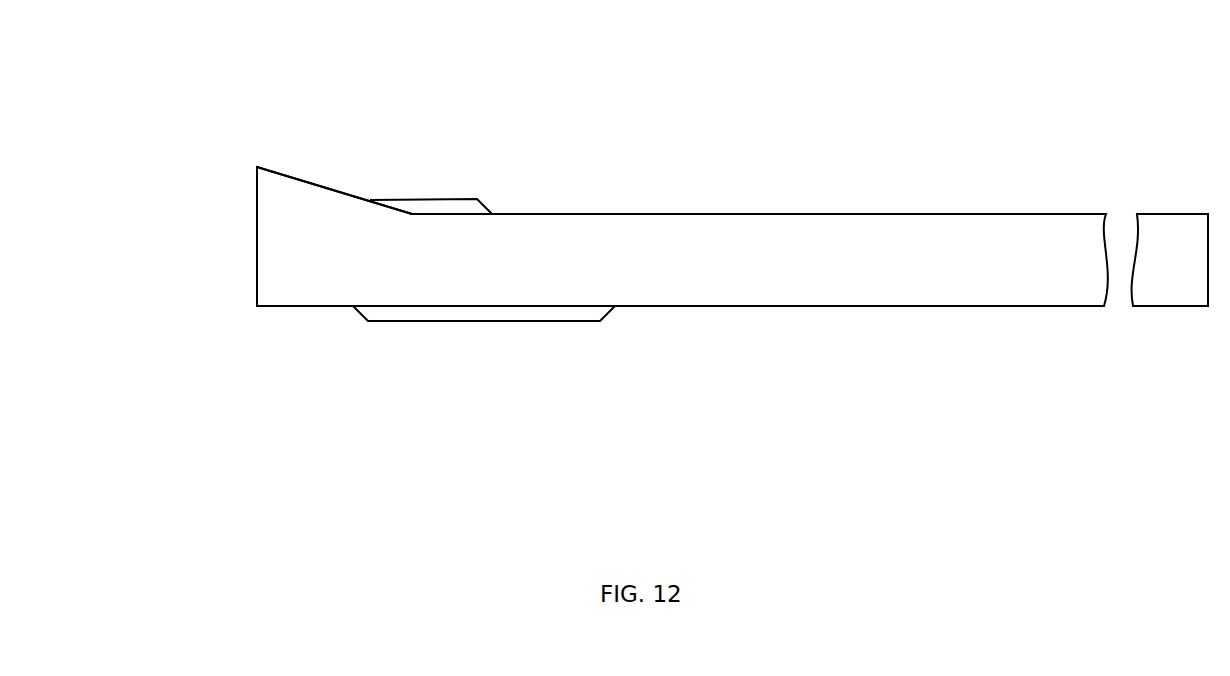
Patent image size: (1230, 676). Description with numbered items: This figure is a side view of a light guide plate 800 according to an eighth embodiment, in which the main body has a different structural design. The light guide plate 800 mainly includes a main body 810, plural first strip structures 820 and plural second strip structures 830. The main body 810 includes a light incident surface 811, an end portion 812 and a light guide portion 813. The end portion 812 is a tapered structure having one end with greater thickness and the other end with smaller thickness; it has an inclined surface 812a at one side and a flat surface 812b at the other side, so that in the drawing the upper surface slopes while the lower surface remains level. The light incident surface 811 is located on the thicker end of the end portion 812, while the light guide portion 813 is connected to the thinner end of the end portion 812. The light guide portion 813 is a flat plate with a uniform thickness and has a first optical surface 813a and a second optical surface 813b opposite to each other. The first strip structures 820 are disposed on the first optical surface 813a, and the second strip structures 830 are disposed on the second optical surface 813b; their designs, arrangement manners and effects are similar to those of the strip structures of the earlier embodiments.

The light guide plate 800 is at (134, 66).
The main body 810 is at (977, 274).
The light incident surface 811 is at (255, 238).
The end portion 812 is at (284, 290).
The inclined surface 812a is at (302, 168).
The flat surface 812b is at (333, 308).
The light guide portion 813 is at (820, 226).
The first optical surface 813a is at (645, 212).
The second optical surface 813b is at (765, 308).
The first strip structures 820 is at (440, 207).
The second strip structures 830 is at (484, 322).